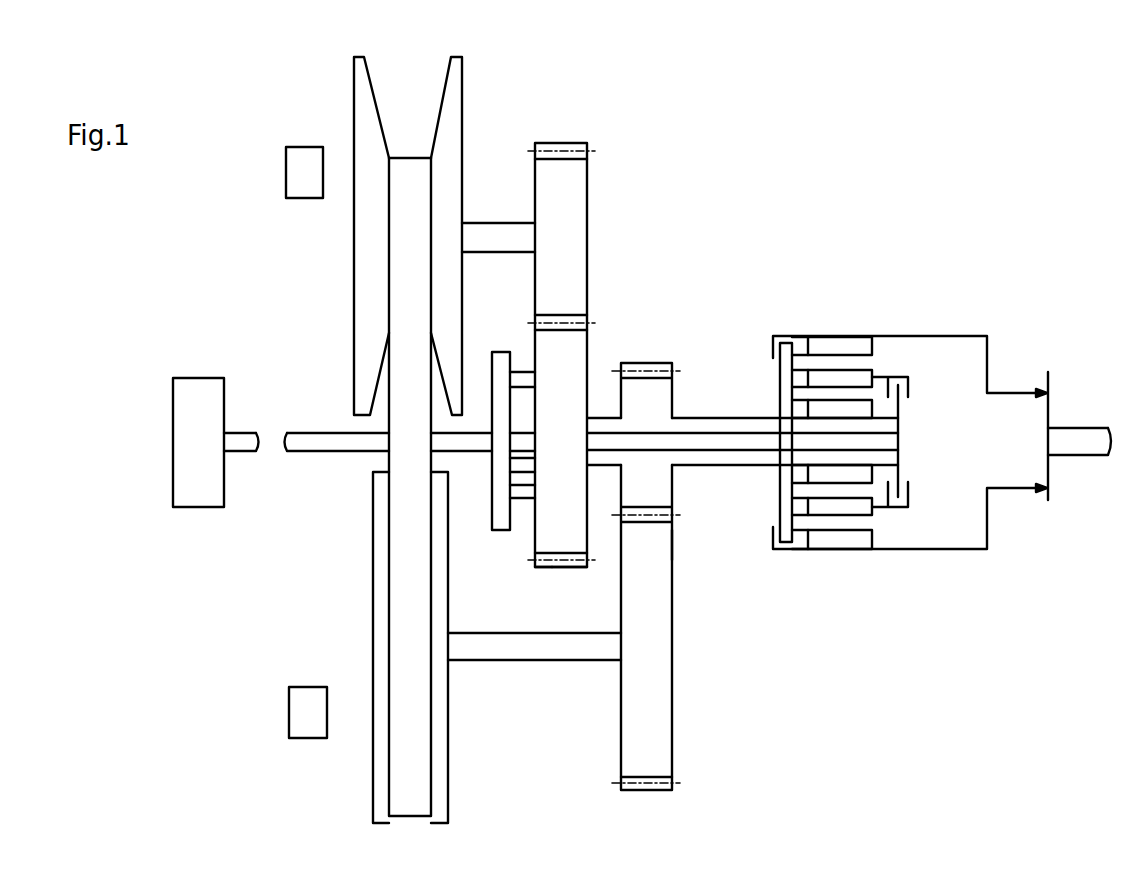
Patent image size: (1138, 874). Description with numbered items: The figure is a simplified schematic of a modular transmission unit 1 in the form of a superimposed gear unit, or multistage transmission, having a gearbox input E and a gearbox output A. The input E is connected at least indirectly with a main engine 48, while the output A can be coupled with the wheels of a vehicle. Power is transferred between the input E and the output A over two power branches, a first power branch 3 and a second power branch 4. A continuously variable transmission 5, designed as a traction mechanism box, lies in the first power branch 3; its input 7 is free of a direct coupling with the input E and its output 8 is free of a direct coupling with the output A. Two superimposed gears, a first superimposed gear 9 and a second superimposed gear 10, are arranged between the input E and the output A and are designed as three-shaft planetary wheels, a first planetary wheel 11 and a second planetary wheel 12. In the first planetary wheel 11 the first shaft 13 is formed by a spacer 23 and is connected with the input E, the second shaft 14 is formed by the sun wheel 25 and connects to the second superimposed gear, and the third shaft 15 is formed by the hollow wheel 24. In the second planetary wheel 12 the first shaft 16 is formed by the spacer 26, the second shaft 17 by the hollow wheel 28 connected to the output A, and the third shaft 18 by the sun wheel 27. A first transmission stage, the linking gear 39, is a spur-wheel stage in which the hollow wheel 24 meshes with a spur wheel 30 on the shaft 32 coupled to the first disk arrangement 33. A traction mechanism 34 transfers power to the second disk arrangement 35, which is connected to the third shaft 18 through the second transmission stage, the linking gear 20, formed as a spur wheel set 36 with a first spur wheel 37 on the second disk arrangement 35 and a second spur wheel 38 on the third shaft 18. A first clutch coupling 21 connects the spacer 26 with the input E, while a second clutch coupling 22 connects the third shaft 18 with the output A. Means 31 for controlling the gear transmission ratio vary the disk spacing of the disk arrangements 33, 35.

The modular transmission unit 1 is at (706, 107).
The first power branch 3 is at (394, 303).
The second power branch 4 is at (643, 341).
The continuously variable transmission 5 is at (394, 103).
The input of the continuously variable transmission 7 is at (472, 230).
The output of the continuously variable transmission 8 is at (553, 655).
The first superimposed gear 9 is at (598, 341).
The second superimposed gear 10 is at (837, 325).
The first planetary wheel 11 is at (588, 370).
The second planetary wheel 12 is at (880, 378).
The first shaft 13 is at (468, 445).
The second shaft 14 is at (632, 395).
The third shaft 15 is at (540, 548).
The first shaft 16 is at (878, 520).
The second shaft 17 is at (985, 324).
The third shaft 18 is at (698, 427).
The linking gear 20 is at (675, 545).
The first clutch coupling 21 is at (916, 385).
The second clutch coupling 22 is at (788, 558).
The spacer 23 is at (500, 531).
The hollow wheel 24 is at (567, 548).
The sun wheel 25 is at (600, 463).
The spacer 26 is at (850, 508).
The sun wheel 27 is at (865, 475).
The hollow wheel 28 is at (865, 343).
The spur wheel 30 is at (600, 348).
The means for controlling the gear transmission ratio 31 is at (302, 709).
The shaft 32 is at (517, 230).
The first disk arrangement 33 is at (363, 107).
The traction mechanism 34 is at (407, 565).
The second disk arrangement 35 is at (385, 600).
The spur wheel set 36 is at (693, 627).
The first spur wheel 37 is at (660, 728).
The second spur wheel 38 is at (655, 483).
The linking gear 39 is at (605, 180).
The main engine 48 is at (188, 458).
The input E is at (297, 437).
The output A is at (1092, 432).